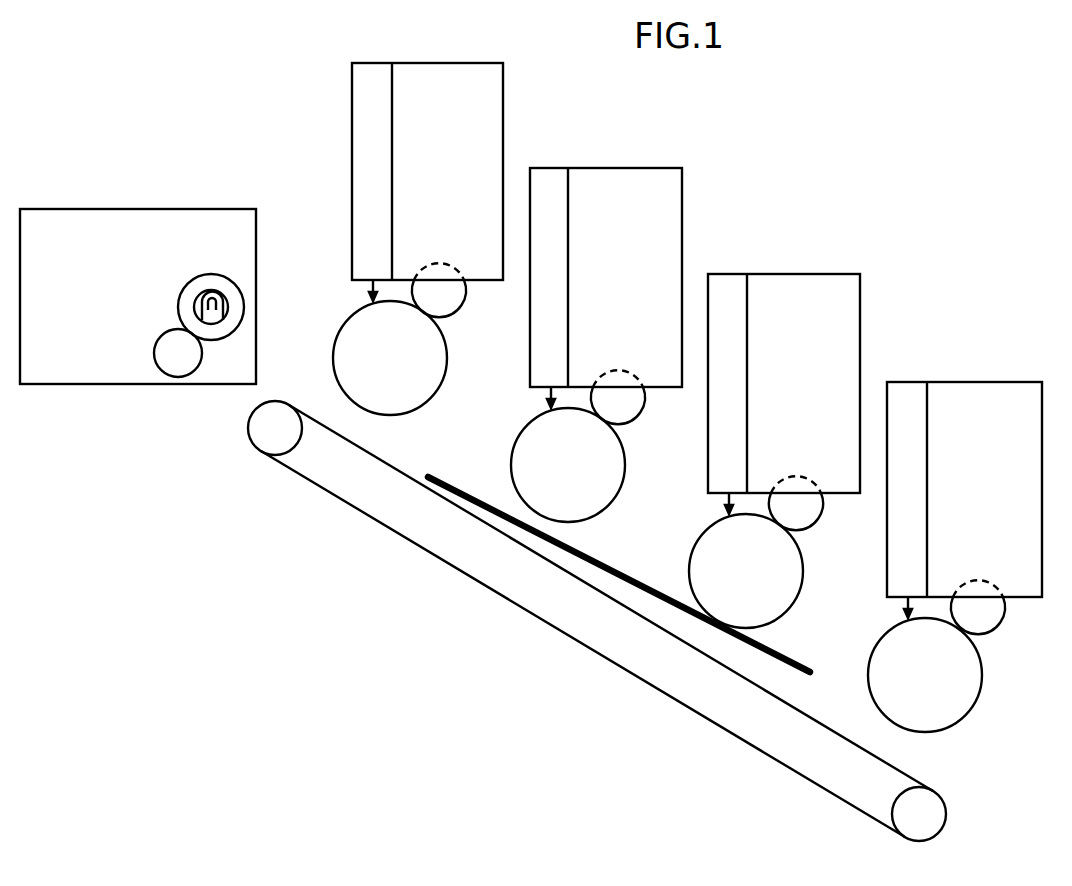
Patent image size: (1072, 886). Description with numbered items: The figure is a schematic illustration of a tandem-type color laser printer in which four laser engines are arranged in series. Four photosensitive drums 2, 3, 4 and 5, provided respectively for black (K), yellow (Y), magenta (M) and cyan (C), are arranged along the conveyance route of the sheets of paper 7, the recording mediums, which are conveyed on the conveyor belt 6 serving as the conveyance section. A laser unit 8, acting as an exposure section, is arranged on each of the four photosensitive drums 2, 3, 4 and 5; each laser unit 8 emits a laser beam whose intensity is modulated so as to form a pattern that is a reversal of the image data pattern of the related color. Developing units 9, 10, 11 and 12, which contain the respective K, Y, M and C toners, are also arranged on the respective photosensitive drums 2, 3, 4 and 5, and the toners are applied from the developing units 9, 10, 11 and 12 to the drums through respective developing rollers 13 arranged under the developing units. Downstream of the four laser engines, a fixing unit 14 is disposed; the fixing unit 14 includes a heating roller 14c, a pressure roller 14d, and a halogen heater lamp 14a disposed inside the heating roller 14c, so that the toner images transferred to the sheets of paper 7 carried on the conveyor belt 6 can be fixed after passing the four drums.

The photosensitive drum 2 is at (350, 320).
The photosensitive drum 3 is at (514, 446).
The photosensitive drum 4 is at (690, 558).
The photosensitive drum 5 is at (869, 662).
The conveyor belt 6 is at (530, 612).
The sheet of paper 7 is at (794, 672).
The laser unit 8 is at (352, 91).
The developing unit 9 is at (450, 63).
The developing unit 10 is at (628, 168).
The developing unit 11 is at (810, 274).
The developing unit 12 is at (991, 382).
The developing roller 13 is at (457, 312).
The fixing unit 14 is at (57, 209).
The halogen heater lamp 14a is at (224, 292).
The heating roller 14c is at (203, 276).
The pressure roller 14d is at (160, 368).